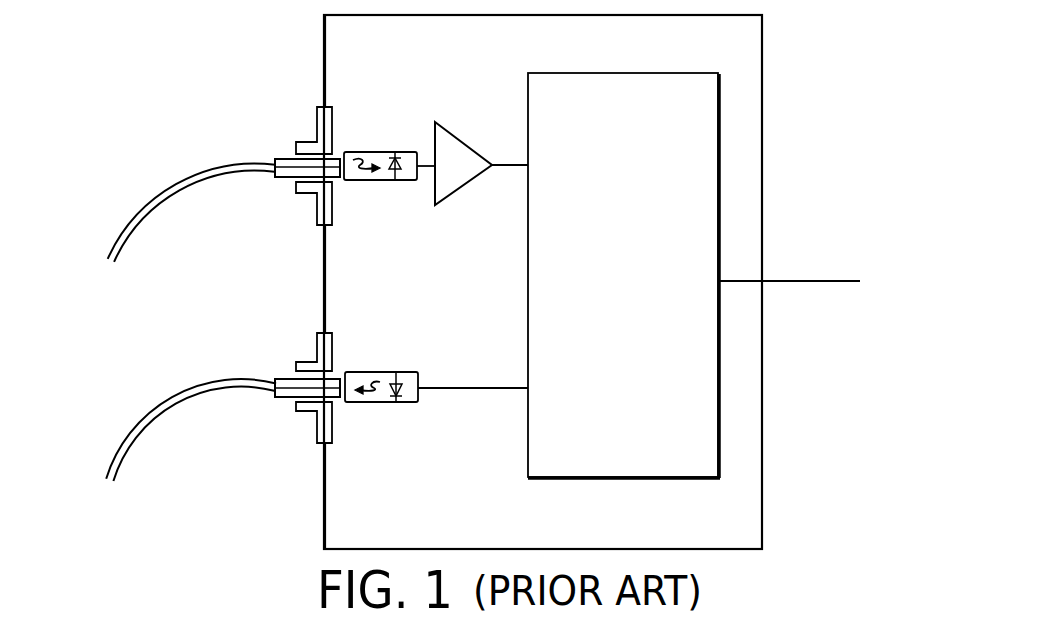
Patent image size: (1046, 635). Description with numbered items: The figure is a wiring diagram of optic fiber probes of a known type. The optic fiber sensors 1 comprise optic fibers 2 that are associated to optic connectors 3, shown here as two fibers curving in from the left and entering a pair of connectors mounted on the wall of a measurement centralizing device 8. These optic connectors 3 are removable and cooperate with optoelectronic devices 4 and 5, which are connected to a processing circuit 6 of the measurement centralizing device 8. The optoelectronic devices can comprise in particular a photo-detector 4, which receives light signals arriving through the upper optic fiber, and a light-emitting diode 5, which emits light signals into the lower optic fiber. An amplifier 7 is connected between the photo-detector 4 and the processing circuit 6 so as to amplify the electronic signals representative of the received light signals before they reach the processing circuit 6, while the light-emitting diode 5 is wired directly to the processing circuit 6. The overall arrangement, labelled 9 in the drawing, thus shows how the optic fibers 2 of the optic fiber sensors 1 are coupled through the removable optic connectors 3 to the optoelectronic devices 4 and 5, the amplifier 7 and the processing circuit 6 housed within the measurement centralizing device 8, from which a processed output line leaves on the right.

The optic fiber sensor 1 is at (113, 203).
The optic fibers 2 is at (187, 183).
The optic connector 3 is at (283, 159).
The photo-detector 4 is at (385, 152).
The light-emitting diode 5 is at (394, 372).
The processing circuit 6 is at (528, 93).
The amplifier 7 is at (450, 195).
The measurement centralizing device 8 is at (323, 51).
The optical sensor device 9 is at (217, 111).